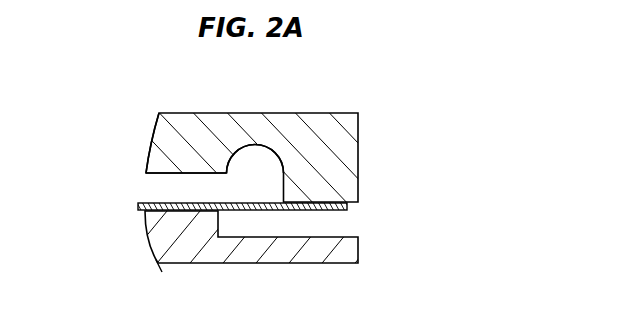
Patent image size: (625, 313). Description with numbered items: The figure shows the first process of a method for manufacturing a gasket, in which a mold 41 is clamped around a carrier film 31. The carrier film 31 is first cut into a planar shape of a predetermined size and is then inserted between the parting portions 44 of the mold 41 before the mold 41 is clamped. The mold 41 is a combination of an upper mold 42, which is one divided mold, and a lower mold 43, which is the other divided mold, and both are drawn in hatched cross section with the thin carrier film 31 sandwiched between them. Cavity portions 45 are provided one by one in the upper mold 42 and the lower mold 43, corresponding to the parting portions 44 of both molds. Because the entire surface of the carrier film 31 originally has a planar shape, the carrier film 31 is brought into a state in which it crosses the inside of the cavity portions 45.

The mold 41 is at (152, 117).
The upper mold 42 is at (158, 157).
The parting portions 44 is at (162, 176).
The cavity portions 45 is at (257, 163).
The carrier film 31 is at (318, 208).
The lower mold 43 is at (158, 233).